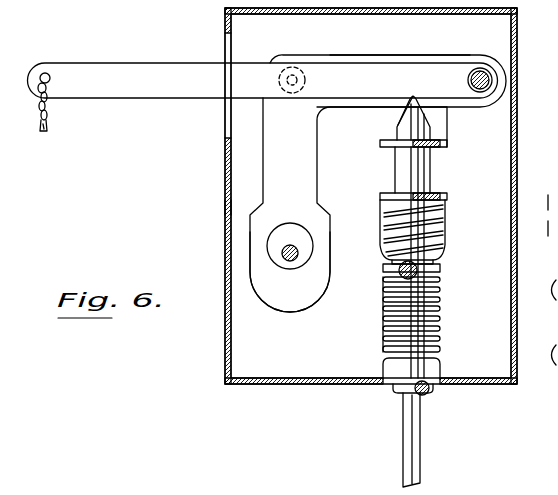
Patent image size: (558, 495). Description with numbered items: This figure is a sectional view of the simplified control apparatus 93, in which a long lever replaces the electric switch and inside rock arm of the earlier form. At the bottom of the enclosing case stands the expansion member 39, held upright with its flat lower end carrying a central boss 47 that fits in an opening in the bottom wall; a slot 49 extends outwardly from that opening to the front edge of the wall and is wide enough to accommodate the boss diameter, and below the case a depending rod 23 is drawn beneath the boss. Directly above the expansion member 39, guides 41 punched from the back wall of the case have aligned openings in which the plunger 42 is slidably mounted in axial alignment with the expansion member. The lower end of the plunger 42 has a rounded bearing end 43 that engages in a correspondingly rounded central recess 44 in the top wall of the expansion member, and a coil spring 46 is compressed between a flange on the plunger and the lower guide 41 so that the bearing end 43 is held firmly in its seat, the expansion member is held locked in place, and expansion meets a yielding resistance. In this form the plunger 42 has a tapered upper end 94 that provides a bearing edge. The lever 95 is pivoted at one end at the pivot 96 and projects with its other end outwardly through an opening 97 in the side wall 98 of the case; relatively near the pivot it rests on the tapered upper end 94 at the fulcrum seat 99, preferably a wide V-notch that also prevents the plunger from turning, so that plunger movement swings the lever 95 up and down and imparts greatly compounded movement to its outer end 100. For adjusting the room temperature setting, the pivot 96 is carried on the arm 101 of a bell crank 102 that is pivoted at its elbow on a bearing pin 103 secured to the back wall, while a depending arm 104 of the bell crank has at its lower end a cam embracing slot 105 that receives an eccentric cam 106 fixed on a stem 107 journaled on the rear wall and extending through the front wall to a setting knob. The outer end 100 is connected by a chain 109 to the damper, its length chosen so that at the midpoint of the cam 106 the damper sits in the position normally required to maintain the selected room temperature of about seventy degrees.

The rod 23 is at (420, 458).
The expansion member 39 is at (440, 334).
The guides 41 is at (440, 146).
The plunger 42 is at (432, 177).
The rounded bearing end 43 is at (440, 262).
The central recess 44 is at (383, 280).
The coil spring 46 is at (445, 226).
The central boss 47 is at (396, 391).
The slot 49 is at (424, 396).
The apparatus 93 is at (222, 161).
The tapered upper end 94 is at (405, 118).
The lever 95 is at (186, 70).
The pivot 96 is at (477, 69).
The opening 97 is at (225, 117).
The side wall 98 is at (225, 195).
The fulcrum seat 99 is at (423, 120).
The outer end 100 is at (57, 58).
The arm 101 is at (428, 55).
The bell crank 102 is at (313, 55).
The bearing pin 103 is at (280, 70).
The arm 104 is at (313, 178).
The cam embracing slot 105 is at (308, 272).
The eccentric cam 106 is at (300, 238).
The stem 107 is at (290, 253).
The chain 109 is at (50, 118).